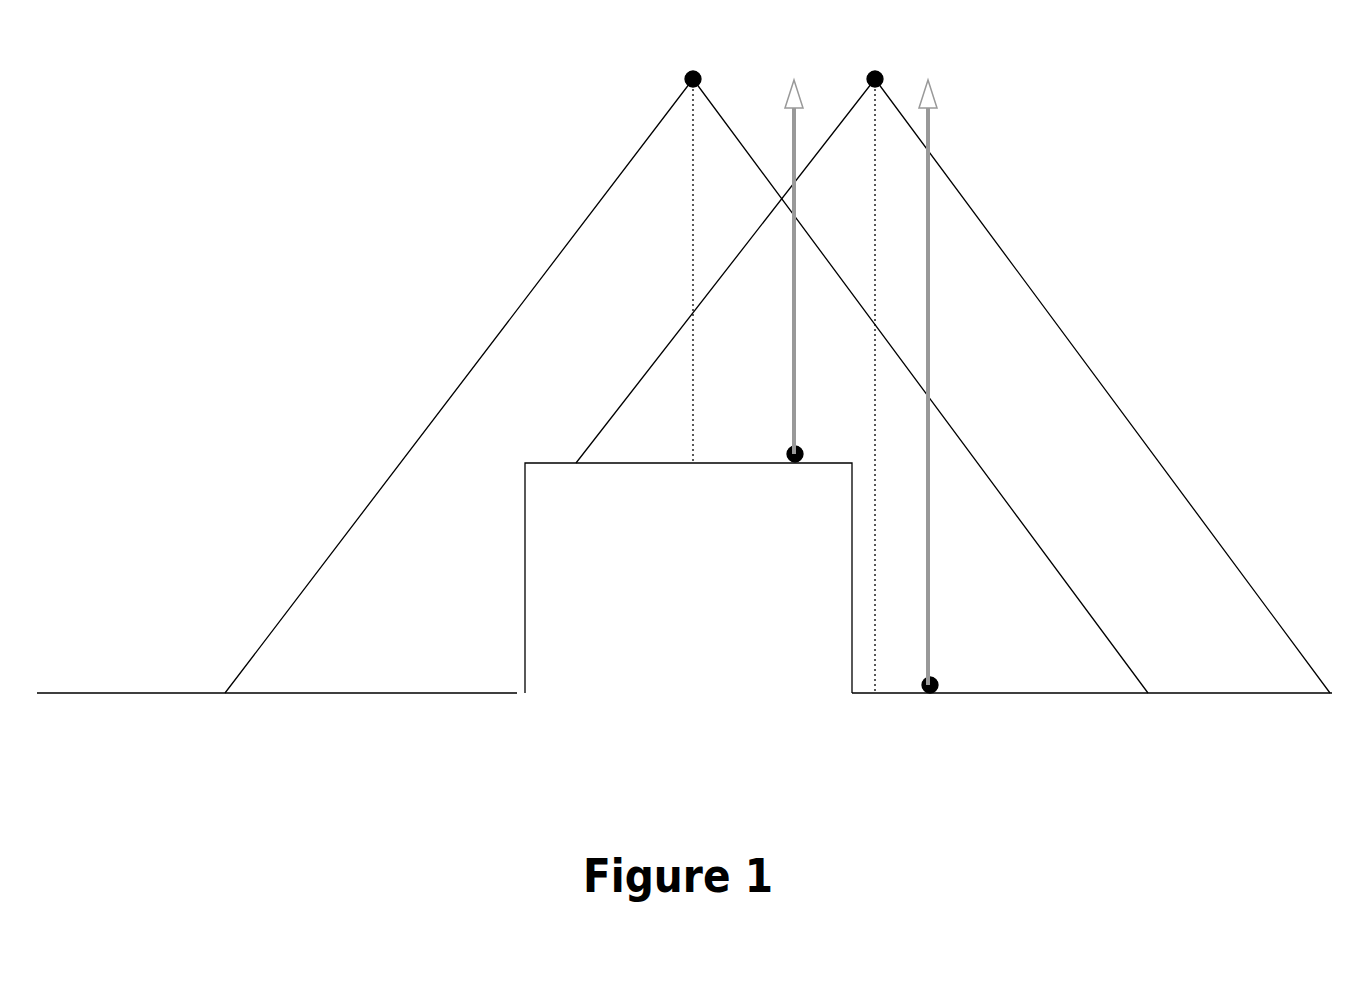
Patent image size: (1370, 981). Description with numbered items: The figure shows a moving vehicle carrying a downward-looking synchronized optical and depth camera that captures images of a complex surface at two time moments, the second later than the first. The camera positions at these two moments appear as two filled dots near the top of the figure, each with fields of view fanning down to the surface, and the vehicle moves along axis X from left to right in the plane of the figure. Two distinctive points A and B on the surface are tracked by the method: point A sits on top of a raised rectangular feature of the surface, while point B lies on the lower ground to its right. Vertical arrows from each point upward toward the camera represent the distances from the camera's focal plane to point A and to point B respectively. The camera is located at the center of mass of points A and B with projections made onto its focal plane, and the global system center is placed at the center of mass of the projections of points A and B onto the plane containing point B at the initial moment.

The distinctive point A is at (785, 439).
The distinctive point B is at (920, 670).